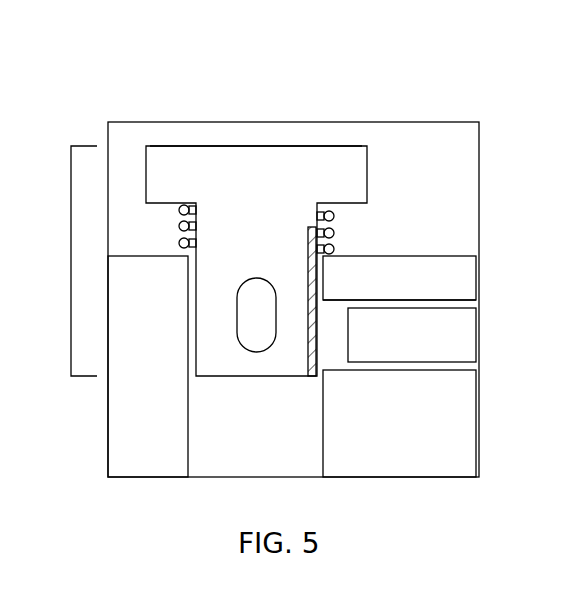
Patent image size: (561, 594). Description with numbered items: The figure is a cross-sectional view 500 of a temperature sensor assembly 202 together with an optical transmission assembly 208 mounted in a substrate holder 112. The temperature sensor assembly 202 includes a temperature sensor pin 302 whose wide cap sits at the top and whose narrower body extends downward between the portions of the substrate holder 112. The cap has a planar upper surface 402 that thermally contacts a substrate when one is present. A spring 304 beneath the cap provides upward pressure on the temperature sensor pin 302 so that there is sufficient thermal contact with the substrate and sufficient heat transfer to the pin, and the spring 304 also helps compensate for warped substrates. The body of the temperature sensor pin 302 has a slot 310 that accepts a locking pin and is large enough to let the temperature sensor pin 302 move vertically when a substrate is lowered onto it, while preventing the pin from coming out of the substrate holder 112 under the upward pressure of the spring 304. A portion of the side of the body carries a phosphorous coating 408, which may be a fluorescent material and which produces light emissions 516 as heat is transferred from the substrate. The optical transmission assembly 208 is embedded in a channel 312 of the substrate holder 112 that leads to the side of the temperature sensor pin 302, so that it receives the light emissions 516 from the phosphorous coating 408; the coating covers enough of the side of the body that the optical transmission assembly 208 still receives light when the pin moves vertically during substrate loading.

The cross-sectional view 500 is at (419, 73).
The temperature sensor assembly 202 is at (71, 274).
The temperature sensor pin 302 is at (274, 182).
The upper surface 402 is at (192, 146).
The spring 304 is at (335, 233).
The substrate holder 112 is at (166, 438).
The optical transmission assembly 208 is at (430, 342).
The channel 312 is at (460, 299).
The slot 310 is at (237, 311).
The phosphorous coating 408 is at (307, 352).
The light emissions 516 is at (340, 337).